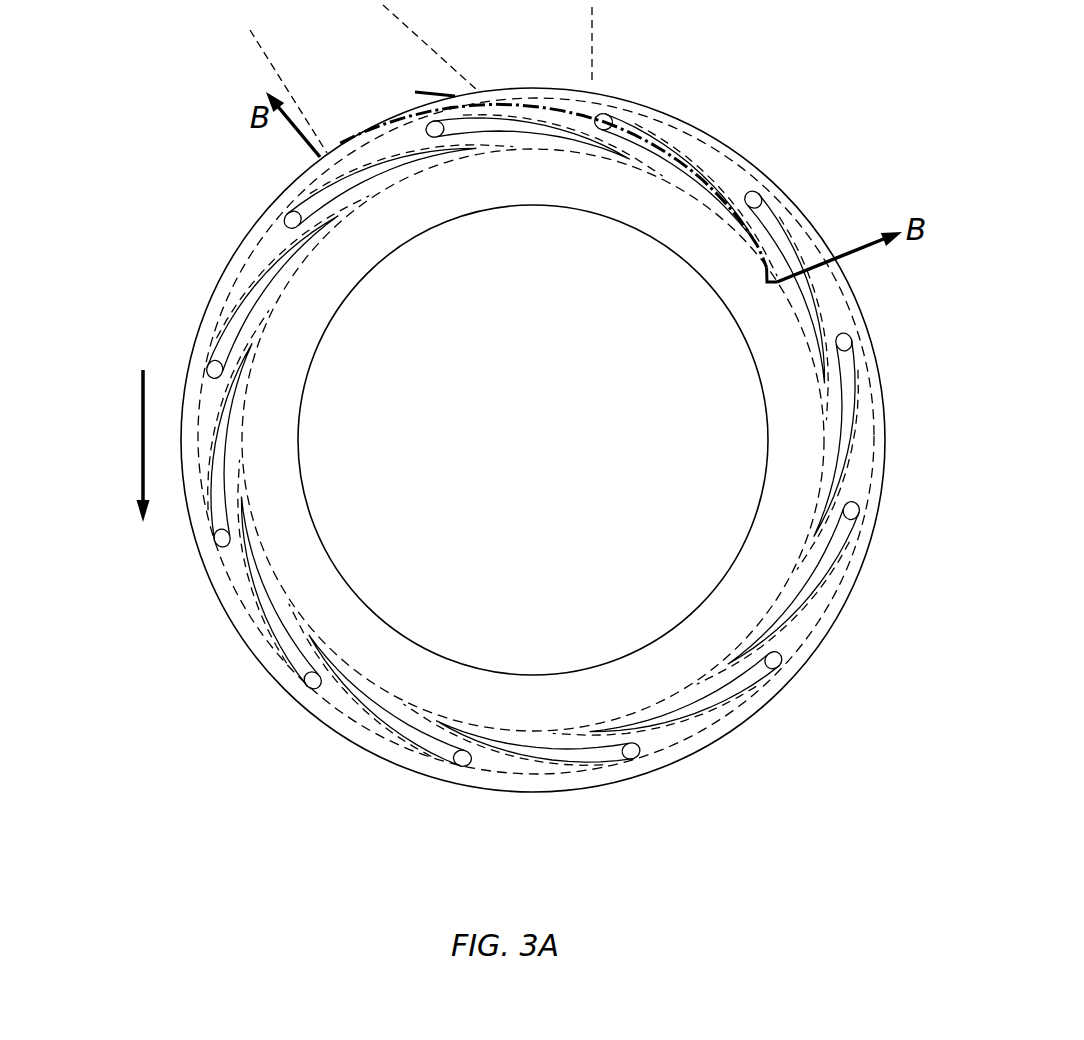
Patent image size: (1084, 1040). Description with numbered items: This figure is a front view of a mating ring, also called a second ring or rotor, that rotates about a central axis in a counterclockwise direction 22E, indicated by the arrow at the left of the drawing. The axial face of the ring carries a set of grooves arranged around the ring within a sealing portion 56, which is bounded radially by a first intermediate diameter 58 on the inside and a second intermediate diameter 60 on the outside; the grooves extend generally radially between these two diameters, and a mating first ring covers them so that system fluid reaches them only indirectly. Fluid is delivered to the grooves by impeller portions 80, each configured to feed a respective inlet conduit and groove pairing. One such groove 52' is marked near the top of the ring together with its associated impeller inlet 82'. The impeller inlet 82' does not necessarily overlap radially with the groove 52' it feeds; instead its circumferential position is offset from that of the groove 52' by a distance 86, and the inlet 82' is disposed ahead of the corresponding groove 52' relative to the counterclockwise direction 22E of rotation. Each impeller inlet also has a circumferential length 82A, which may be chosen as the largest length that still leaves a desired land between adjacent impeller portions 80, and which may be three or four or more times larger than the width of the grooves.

The counterclockwise direction 22E is at (140, 436).
The groove 52' is at (558, 202).
The sealing portion 56 is at (845, 305).
The first intermediate diameter 58 is at (822, 400).
The second intermediate diameter 60 is at (868, 448).
The impeller portion 80 is at (473, 90).
The impeller inlet 82' is at (419, 79).
The circumferential length 82A is at (273, 67).
The distance 86 is at (590, 50).